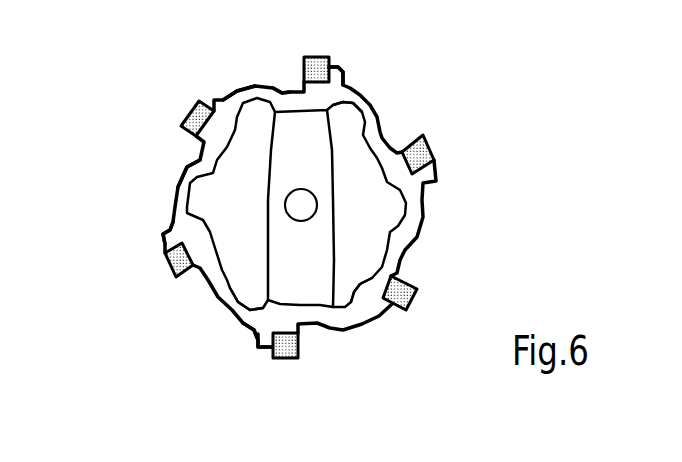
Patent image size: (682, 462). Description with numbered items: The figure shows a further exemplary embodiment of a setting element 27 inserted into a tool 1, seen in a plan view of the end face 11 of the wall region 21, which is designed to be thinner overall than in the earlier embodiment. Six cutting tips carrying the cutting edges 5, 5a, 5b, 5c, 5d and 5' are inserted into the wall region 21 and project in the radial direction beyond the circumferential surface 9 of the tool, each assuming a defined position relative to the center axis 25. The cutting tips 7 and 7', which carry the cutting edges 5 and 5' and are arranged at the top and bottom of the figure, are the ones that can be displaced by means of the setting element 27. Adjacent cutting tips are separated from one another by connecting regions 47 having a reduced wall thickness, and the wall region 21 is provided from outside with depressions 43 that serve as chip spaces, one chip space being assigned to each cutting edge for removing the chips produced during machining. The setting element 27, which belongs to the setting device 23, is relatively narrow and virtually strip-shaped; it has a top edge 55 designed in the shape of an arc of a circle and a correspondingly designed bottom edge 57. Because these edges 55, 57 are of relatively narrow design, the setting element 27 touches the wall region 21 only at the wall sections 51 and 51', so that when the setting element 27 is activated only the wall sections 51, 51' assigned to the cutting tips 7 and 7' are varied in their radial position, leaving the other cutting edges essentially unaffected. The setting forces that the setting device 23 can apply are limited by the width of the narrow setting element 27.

The tool 1 is at (441, 225).
The cutting edge 5 is at (289, 43).
The further cutting edge 5a is at (173, 127).
The further cutting edge 5b is at (423, 137).
The further cutting edge 5c is at (420, 290).
The further cutting edge 5d is at (173, 283).
The cutting edge 5' is at (300, 382).
The cutting tip 7 is at (340, 45).
The cutting tip 7' is at (265, 386).
The circumferential surface 9 is at (165, 242).
The end face 11 is at (370, 297).
The wall region 21 is at (197, 163).
The setting device 23 is at (339, 180).
The center axis 25 is at (303, 210).
The setting element 27 is at (313, 160).
The depression 43 is at (287, 92).
The connecting region 47 is at (230, 87).
The wall section 51 is at (376, 66).
The wall section 51' is at (229, 387).
The top edge 55 is at (295, 115).
The bottom edge 57 is at (284, 308).